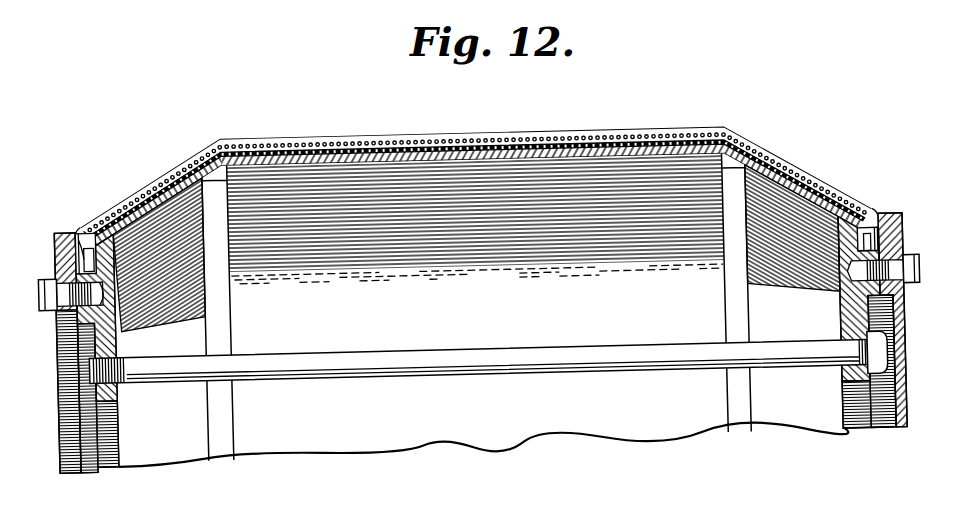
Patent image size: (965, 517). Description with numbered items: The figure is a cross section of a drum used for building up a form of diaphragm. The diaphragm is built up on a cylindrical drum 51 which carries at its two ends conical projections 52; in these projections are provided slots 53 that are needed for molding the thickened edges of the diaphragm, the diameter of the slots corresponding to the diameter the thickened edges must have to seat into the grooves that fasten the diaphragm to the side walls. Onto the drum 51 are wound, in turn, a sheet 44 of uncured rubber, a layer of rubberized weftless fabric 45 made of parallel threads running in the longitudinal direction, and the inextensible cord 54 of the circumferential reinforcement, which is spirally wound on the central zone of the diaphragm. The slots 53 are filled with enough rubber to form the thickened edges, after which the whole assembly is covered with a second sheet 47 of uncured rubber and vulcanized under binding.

The sheet of uncured rubber 44 is at (509, 143).
The layer of rubberized weftless fabric 45 is at (331, 138).
The second sheet of uncured rubber 47 is at (411, 135).
The cylindrical drum 51 is at (642, 154).
The conical projections 52 is at (145, 195).
The slots 53 is at (79, 245).
The inextensible cord 54 is at (597, 136).